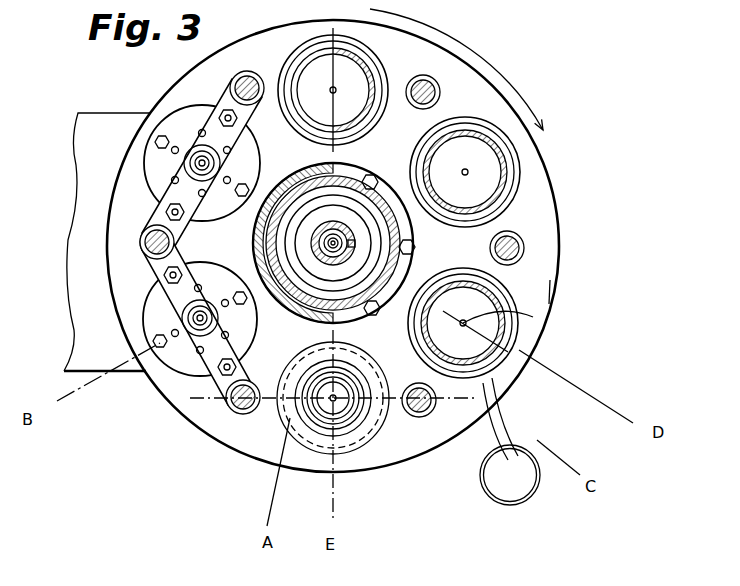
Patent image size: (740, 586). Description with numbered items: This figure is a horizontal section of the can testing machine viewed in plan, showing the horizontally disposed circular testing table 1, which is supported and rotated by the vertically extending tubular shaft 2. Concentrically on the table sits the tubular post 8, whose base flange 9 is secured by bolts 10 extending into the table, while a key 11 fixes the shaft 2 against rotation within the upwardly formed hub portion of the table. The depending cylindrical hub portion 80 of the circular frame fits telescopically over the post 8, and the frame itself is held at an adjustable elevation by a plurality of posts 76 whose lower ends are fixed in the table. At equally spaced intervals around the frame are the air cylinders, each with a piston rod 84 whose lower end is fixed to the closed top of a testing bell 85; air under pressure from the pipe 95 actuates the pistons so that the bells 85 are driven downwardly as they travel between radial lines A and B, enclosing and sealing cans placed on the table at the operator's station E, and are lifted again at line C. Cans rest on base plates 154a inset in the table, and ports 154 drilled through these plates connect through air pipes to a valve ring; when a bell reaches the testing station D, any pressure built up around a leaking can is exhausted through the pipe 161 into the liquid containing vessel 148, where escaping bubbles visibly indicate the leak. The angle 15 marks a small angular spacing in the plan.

The testing table 1 is at (546, 210).
The tubular shaft 2 is at (376, 236).
The tubular post 8 is at (293, 243).
The base flange 9 is at (385, 312).
The bolts 10 is at (362, 320).
The key 11 is at (356, 249).
The angle 15 is at (485, 323).
The posts 76 is at (148, 242).
The depending cylindrical hub portion 80 is at (310, 257).
The piston rod 84 is at (197, 164).
The testing bell 85 is at (517, 170).
The pipe 95 is at (342, 238).
The liquid containing vessel 148 is at (523, 498).
The ports 154 is at (365, 418).
The base plates 154a is at (284, 420).
The pipe 161 is at (515, 432).